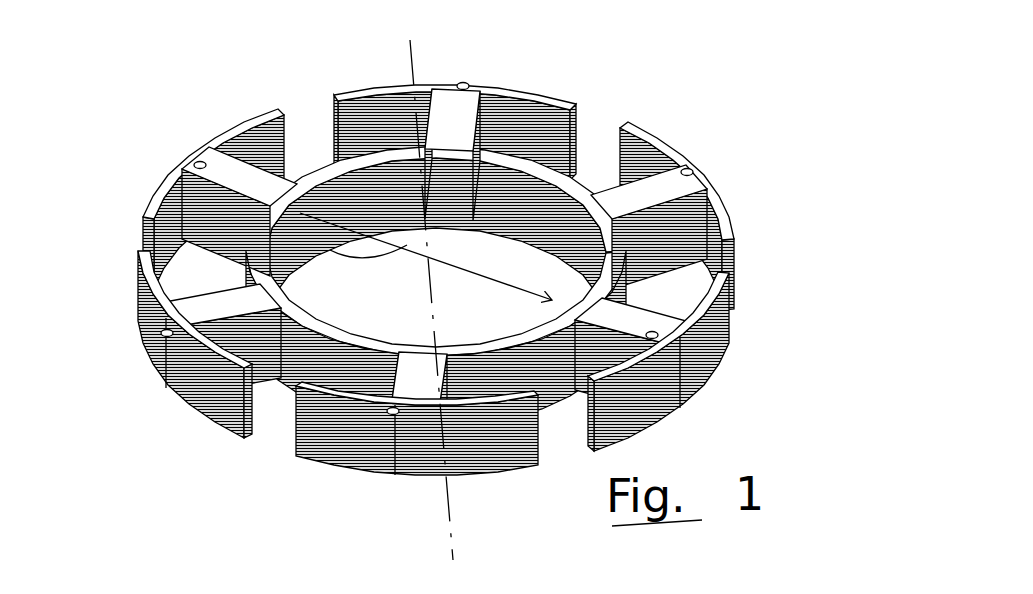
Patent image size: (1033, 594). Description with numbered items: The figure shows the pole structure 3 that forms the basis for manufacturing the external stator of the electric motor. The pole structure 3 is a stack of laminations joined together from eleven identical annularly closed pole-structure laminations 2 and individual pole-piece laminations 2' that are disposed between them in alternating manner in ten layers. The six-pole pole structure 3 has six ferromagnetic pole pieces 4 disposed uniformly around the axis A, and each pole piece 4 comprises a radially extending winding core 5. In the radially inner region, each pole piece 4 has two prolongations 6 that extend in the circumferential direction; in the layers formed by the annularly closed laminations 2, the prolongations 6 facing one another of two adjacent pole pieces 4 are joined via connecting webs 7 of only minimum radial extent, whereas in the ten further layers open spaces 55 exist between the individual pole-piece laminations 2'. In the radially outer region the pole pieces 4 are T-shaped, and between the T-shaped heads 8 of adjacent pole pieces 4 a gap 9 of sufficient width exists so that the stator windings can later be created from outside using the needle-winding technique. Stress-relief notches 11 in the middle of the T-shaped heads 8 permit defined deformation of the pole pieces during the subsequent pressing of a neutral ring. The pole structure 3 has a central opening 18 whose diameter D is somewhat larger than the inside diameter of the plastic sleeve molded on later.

The annularly closed pole-structure lamination 2 is at (200, 156).
The individual pole-piece lamination 2' is at (417, 475).
The pole structure 3 is at (463, 289).
The pole piece 4 is at (172, 436).
The winding core 5 is at (284, 192).
The open space 55 is at (361, 170).
The prolongation 6 is at (690, 228).
The connecting web 7 is at (518, 165).
The T-shaped head 8 is at (708, 377).
The gap 9 is at (262, 455).
The stress-relief notch 11 is at (396, 489).
The central opening 18 is at (180, 364).
The axis A is at (422, 64).
The diameter of central opening D is at (300, 213).